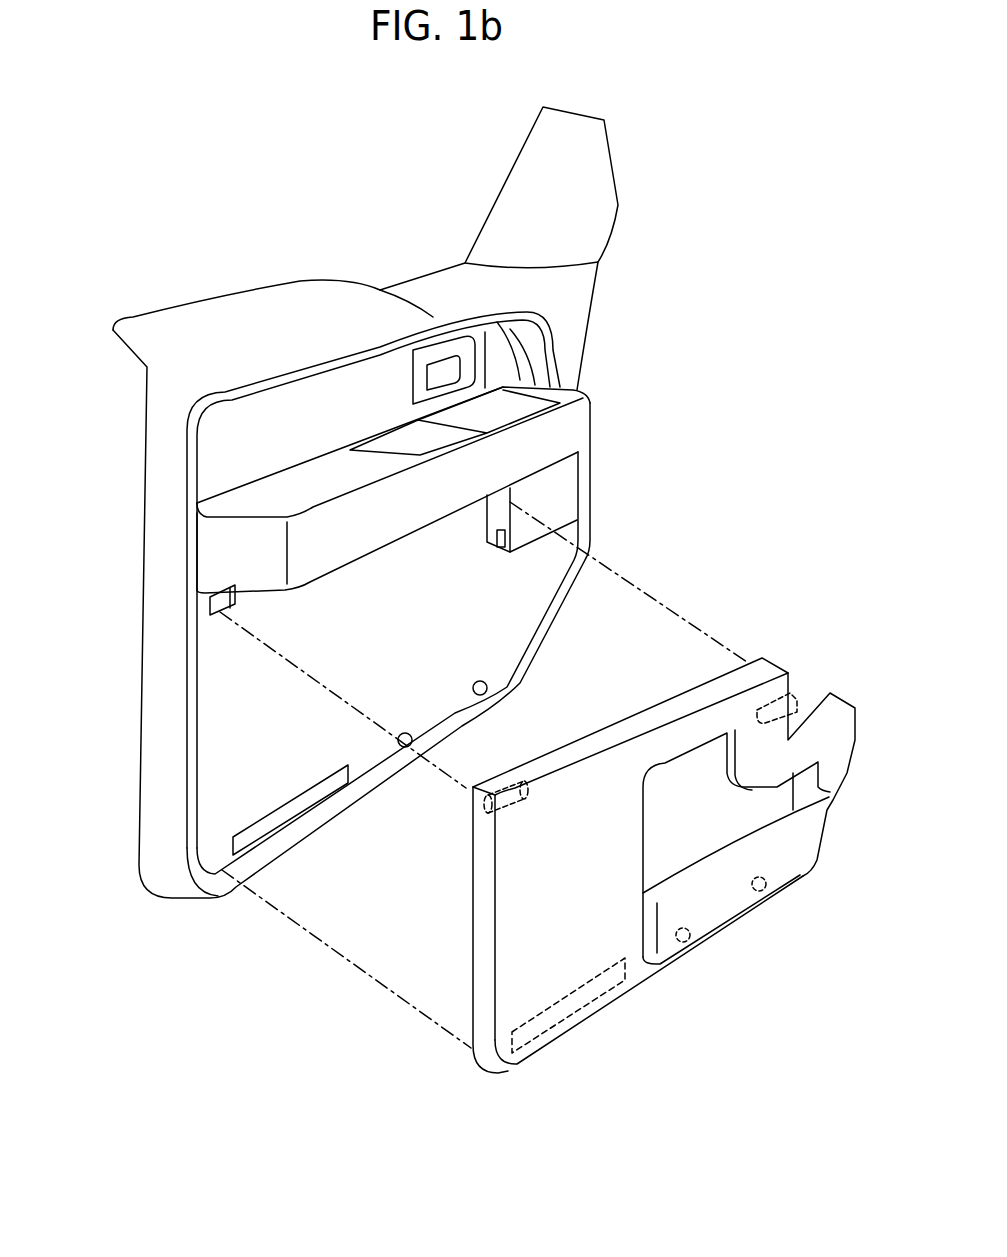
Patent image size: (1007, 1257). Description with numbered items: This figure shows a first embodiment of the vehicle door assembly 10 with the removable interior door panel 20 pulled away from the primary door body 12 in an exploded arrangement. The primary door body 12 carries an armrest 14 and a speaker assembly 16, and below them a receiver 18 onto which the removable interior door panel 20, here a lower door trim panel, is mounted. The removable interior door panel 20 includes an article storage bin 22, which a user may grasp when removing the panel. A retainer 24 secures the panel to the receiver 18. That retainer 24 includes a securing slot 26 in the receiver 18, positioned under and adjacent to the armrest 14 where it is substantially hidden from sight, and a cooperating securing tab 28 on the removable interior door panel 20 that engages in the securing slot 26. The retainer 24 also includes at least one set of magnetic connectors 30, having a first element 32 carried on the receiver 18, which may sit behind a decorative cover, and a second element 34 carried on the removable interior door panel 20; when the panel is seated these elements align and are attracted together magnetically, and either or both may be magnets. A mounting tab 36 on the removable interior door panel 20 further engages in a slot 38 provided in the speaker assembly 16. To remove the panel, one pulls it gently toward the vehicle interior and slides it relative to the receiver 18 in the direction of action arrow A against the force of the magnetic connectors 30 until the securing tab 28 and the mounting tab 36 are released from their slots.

The vehicle door assembly 10 is at (137, 282).
The primary door body 12 is at (165, 467).
The armrest 14 is at (288, 485).
The speaker assembly 16 is at (552, 490).
The receiver 18 is at (232, 706).
The removable interior door panel 20 is at (558, 978).
The article storage bin 22 is at (707, 897).
The retainer 24 is at (175, 639).
The securing slot 26 is at (210, 603).
The securing tab 28 is at (475, 808).
The magnetic connectors 30 is at (418, 968).
The first element 32 is at (293, 803).
The second element 34 is at (766, 891).
The mounting tab 36 is at (768, 700).
The slot 38 is at (500, 547).
The action arrow A is at (645, 1064).